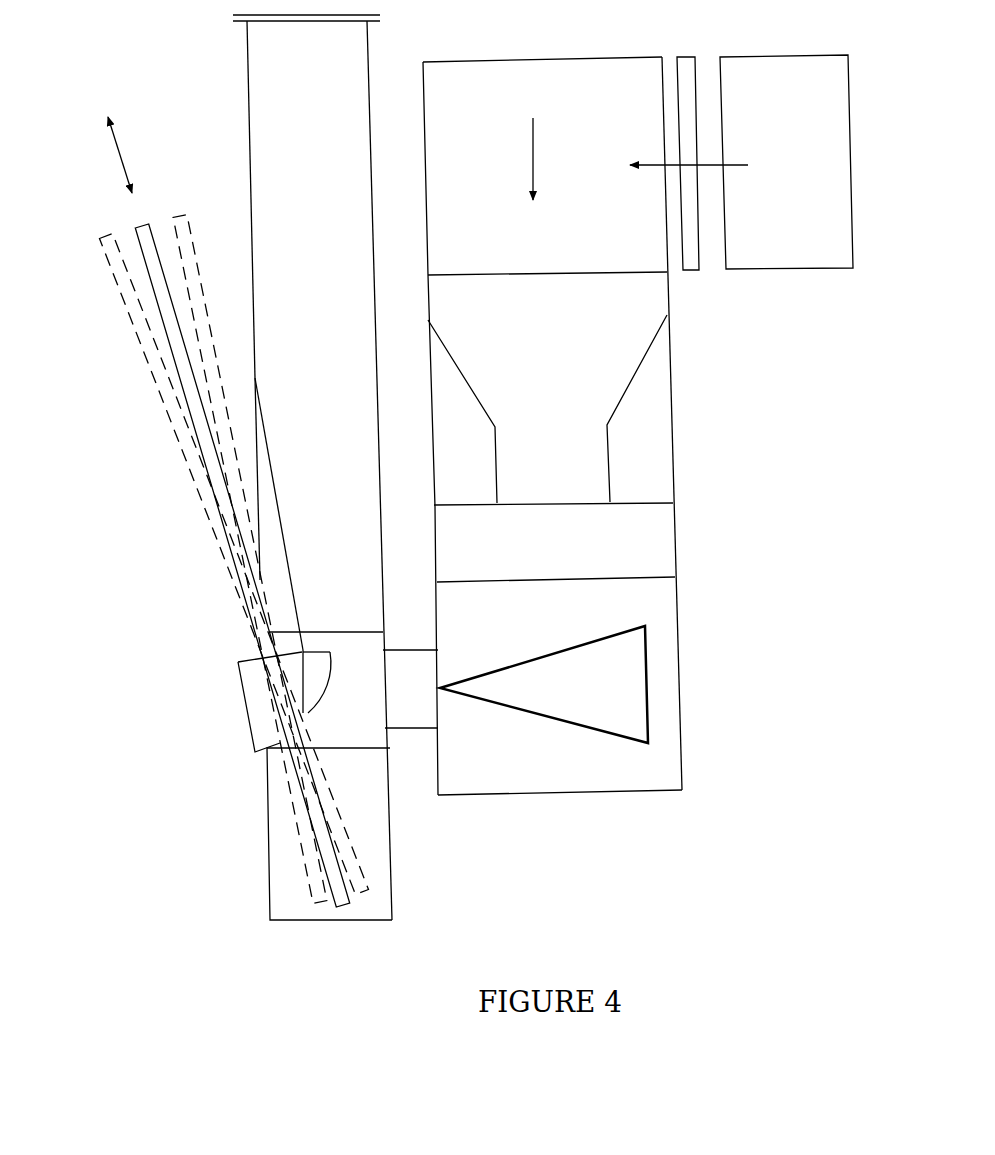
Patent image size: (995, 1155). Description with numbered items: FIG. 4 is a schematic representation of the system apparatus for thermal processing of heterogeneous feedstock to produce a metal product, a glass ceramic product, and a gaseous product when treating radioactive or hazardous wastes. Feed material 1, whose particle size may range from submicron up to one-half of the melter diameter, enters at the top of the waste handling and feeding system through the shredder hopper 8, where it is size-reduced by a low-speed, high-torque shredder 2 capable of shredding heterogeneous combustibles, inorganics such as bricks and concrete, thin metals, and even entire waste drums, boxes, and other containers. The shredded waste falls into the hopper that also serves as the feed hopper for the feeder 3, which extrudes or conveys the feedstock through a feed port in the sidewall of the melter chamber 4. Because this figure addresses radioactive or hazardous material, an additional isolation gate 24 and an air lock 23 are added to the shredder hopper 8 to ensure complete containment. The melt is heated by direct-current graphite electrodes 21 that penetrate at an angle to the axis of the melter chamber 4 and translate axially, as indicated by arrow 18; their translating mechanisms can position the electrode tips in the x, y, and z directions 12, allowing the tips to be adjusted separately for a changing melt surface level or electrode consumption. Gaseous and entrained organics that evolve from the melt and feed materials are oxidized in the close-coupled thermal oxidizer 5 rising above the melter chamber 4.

The feed material 1 is at (540, 109).
The shredder 2 is at (675, 552).
The feeder 3 is at (647, 685).
The melter chamber 4 is at (240, 802).
The thermal oxidizer 5 is at (373, 255).
The shredder hopper 8 is at (633, 378).
The x, y, and z directions 12 is at (110, 292).
The axial translation arrow 18 is at (97, 155).
The graphite electrodes 21 is at (145, 222).
The air lock 23 is at (852, 122).
The isolation gate 24 is at (693, 270).